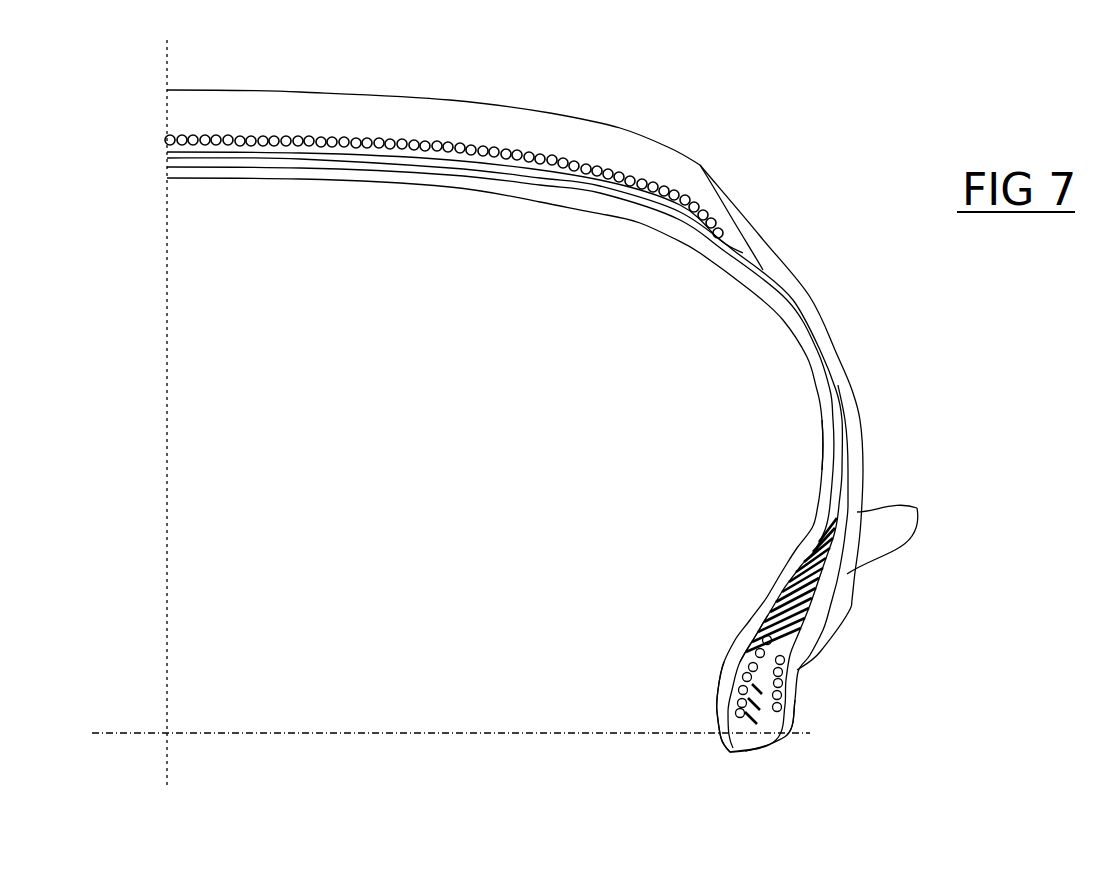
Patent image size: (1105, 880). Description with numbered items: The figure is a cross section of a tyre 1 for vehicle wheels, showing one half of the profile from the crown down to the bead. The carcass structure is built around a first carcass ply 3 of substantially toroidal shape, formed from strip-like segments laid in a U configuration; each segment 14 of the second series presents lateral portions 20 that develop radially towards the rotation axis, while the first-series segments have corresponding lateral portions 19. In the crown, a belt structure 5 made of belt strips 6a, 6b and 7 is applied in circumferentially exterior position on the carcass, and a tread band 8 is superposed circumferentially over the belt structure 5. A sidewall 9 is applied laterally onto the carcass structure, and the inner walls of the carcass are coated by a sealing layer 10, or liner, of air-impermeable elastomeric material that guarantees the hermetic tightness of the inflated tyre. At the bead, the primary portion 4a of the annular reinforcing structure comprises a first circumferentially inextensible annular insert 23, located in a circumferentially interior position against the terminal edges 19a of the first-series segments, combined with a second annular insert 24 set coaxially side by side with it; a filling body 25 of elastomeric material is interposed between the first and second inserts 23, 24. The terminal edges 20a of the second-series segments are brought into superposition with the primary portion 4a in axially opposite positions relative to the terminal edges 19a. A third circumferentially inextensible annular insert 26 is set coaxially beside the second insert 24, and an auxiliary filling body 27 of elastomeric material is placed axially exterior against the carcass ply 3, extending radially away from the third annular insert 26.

The tyre 1 is at (808, 152).
The first carcass ply 3 is at (832, 337).
The primary portion 4a is at (757, 742).
The belt structure 5 is at (710, 198).
The belt strip 6a is at (643, 197).
The belt strip 6b is at (593, 173).
The belt strip 7 is at (547, 150).
The tread band 8 is at (448, 110).
The sidewall 9 is at (885, 528).
The sealing layer 10 is at (822, 467).
The strip-like segment 14 is at (812, 527).
The lateral portion 19 is at (772, 610).
The terminal edge 19a is at (718, 700).
The lateral portion 20 is at (837, 390).
The terminal edge 20a is at (805, 723).
The first annular insert 23 is at (740, 647).
The second annular insert 24 is at (793, 697).
The filling body 25 is at (738, 675).
The third annular insert 26 is at (800, 670).
The auxiliary filling body 27 is at (790, 578).